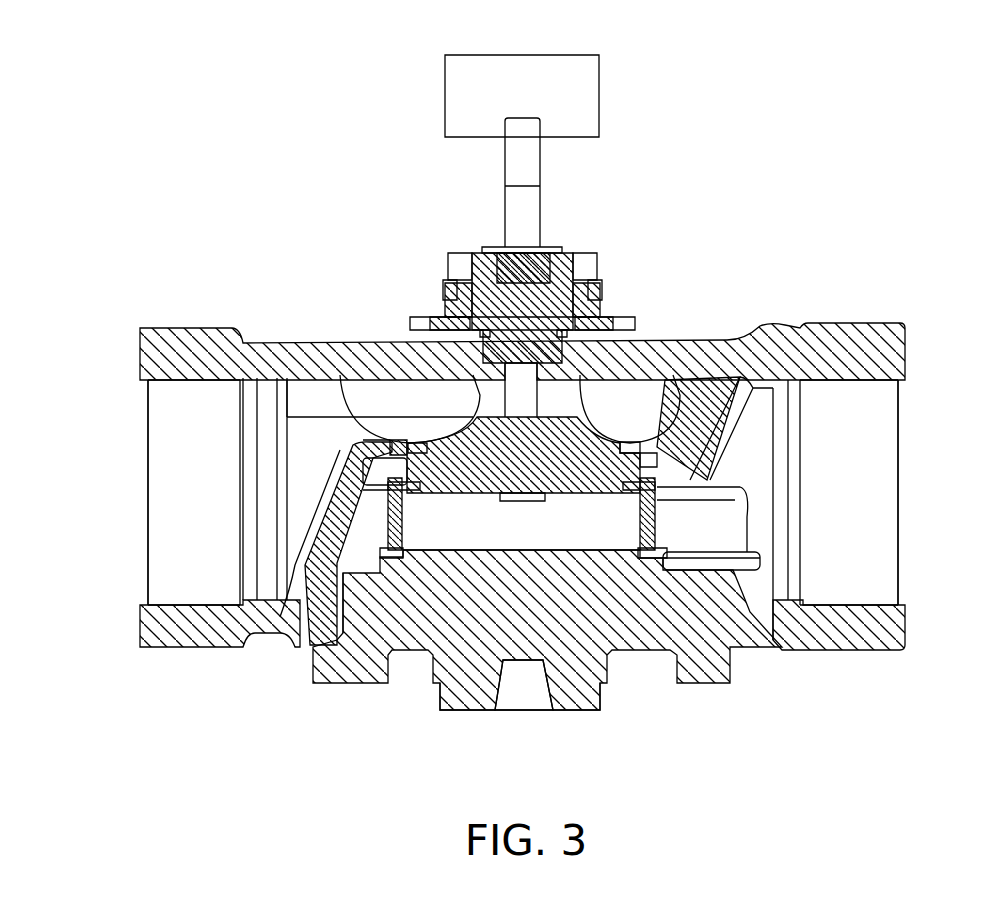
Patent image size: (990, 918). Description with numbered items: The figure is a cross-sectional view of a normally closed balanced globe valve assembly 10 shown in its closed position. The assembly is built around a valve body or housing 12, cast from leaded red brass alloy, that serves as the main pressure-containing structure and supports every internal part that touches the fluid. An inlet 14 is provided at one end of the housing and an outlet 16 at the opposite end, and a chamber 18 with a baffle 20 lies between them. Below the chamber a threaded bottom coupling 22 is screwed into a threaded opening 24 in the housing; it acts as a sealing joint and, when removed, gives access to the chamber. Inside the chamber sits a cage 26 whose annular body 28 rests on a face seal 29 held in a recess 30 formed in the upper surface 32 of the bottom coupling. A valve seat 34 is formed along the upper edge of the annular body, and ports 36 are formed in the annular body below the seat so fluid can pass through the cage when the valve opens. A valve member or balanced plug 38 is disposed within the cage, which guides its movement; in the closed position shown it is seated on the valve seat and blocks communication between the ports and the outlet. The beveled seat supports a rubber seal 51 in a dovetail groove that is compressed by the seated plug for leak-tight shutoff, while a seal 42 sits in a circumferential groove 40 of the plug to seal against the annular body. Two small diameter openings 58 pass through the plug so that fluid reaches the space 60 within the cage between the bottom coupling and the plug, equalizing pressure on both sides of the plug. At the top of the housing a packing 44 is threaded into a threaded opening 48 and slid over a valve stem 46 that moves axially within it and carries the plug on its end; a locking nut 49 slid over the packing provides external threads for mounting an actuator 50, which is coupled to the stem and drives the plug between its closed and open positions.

The balanced globe valve assembly 10 is at (820, 192).
The valve body or housing 12 is at (150, 654).
The inlet 14 is at (143, 380).
The outlet 16 is at (888, 603).
The chamber 18 is at (627, 427).
The baffle 20 is at (317, 503).
The bottom coupling 22 is at (460, 685).
The threaded opening 24 is at (700, 615).
The cage 26 is at (663, 431).
The annular body 28 is at (333, 490).
The face seal 29 is at (638, 555).
The recess 30 is at (385, 638).
The upper surface 32 is at (547, 655).
The valve seat 34 is at (341, 376).
The ports 36 is at (345, 470).
The valve member or balanced plug 38 is at (487, 503).
The circumferential groove 40 is at (700, 490).
The seal 42 is at (330, 490).
The packing 44 is at (458, 298).
The valve stem 46 is at (565, 262).
The threaded opening 48 is at (476, 266).
The locking nut 49 is at (605, 318).
The actuator 50 is at (566, 55).
The seal 51 is at (420, 458).
The small diameter openings 58 is at (440, 326).
The space 60 is at (598, 522).